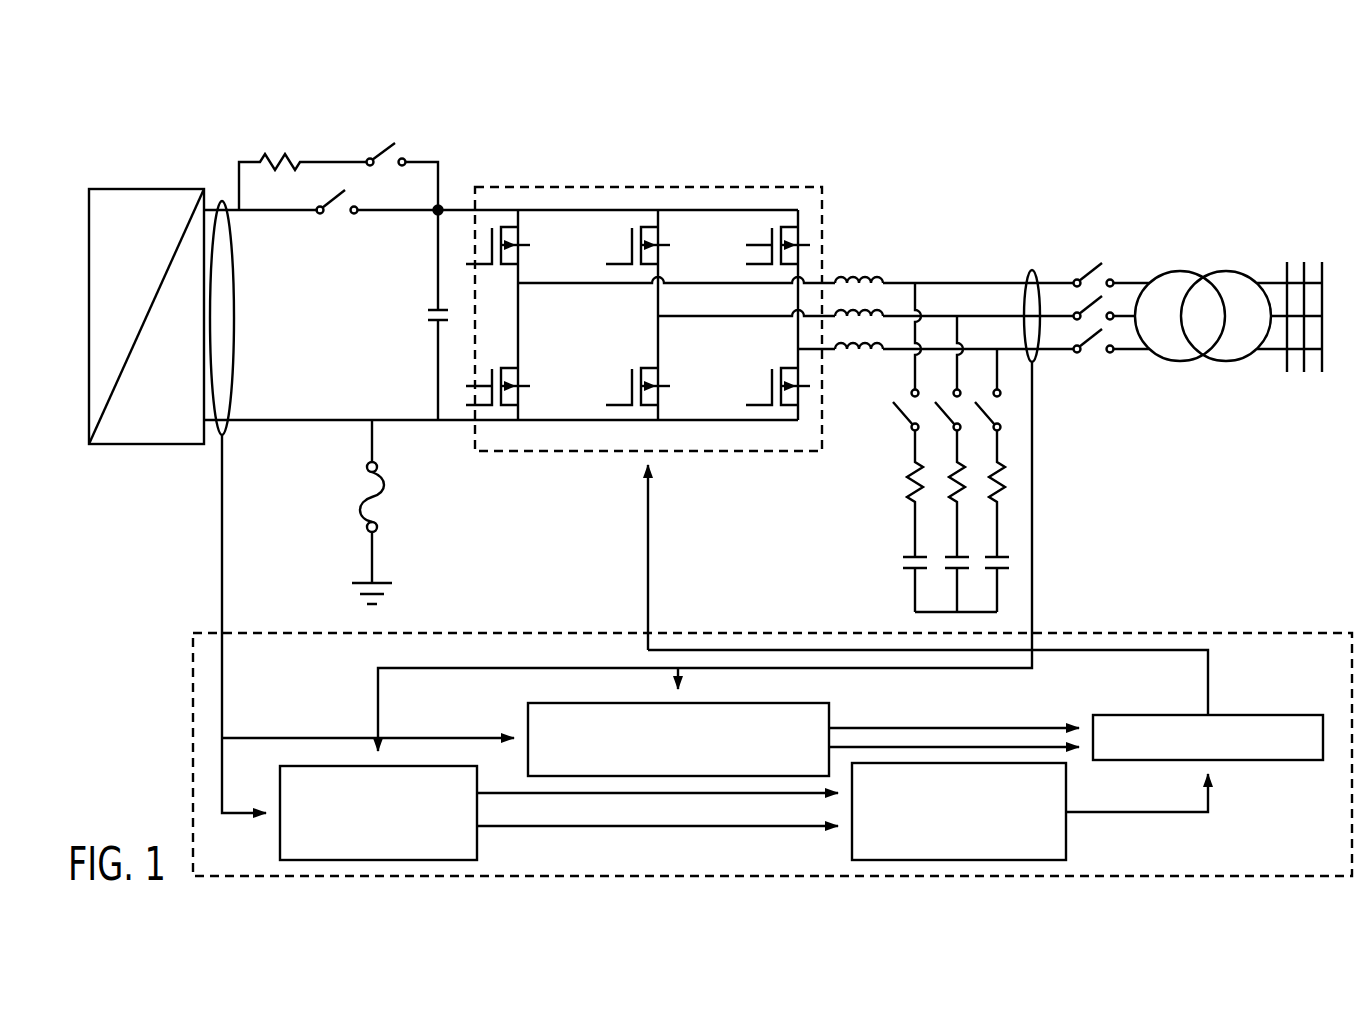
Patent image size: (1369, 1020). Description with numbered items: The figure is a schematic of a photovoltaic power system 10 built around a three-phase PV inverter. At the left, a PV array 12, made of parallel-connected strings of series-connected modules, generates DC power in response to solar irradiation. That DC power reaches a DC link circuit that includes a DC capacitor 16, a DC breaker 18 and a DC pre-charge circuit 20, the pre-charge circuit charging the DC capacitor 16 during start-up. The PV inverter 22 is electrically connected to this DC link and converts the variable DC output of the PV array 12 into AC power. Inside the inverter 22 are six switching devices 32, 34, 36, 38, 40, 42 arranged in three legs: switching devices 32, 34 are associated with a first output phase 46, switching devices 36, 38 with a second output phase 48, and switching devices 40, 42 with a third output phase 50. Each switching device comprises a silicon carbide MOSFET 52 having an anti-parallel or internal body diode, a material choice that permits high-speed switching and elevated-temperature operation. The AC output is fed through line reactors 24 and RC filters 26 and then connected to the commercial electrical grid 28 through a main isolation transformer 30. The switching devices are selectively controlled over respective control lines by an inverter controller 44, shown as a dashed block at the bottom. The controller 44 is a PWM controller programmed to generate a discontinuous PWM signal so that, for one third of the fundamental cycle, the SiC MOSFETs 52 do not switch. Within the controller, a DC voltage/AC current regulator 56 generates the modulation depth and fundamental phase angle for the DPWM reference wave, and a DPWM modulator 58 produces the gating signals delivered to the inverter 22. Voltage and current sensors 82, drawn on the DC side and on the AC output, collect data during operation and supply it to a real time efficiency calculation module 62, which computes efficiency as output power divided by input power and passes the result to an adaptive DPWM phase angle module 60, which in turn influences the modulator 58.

The photovoltaic power system 10 is at (960, 195).
The PV array 12 is at (147, 475).
The DC capacitor 16 is at (432, 320).
The DC breaker 18 is at (340, 215).
The DC pre-charge circuit 20 is at (278, 135).
The PV inverter 22 is at (508, 135).
The line reactors 24 is at (865, 278).
The RC filters 26 is at (893, 553).
The commercial electrical system 28 is at (1323, 255).
The main isolation transformer 30 is at (1203, 268).
The switching device 32 is at (503, 210).
The switching device 34 is at (511, 420).
The switching device 36 is at (643, 210).
The switching device 38 is at (645, 420).
The switching device 40 is at (783, 210).
The switching device 42 is at (790, 420).
The inverter controller 44 is at (1150, 620).
The first output phase 46 is at (585, 283).
The second output phase 48 is at (722, 316).
The third output phase 50 is at (827, 352).
The SiC MOSFET 52 is at (764, 245).
The DC voltage/AC current regulator 56 is at (528, 720).
The DPWM modulator 58 is at (1178, 715).
The adaptive DPWM phase angle module 60 is at (1066, 830).
The real time efficiency calculation module 62 is at (280, 778).
The voltage and current sensors 82 is at (243, 318).